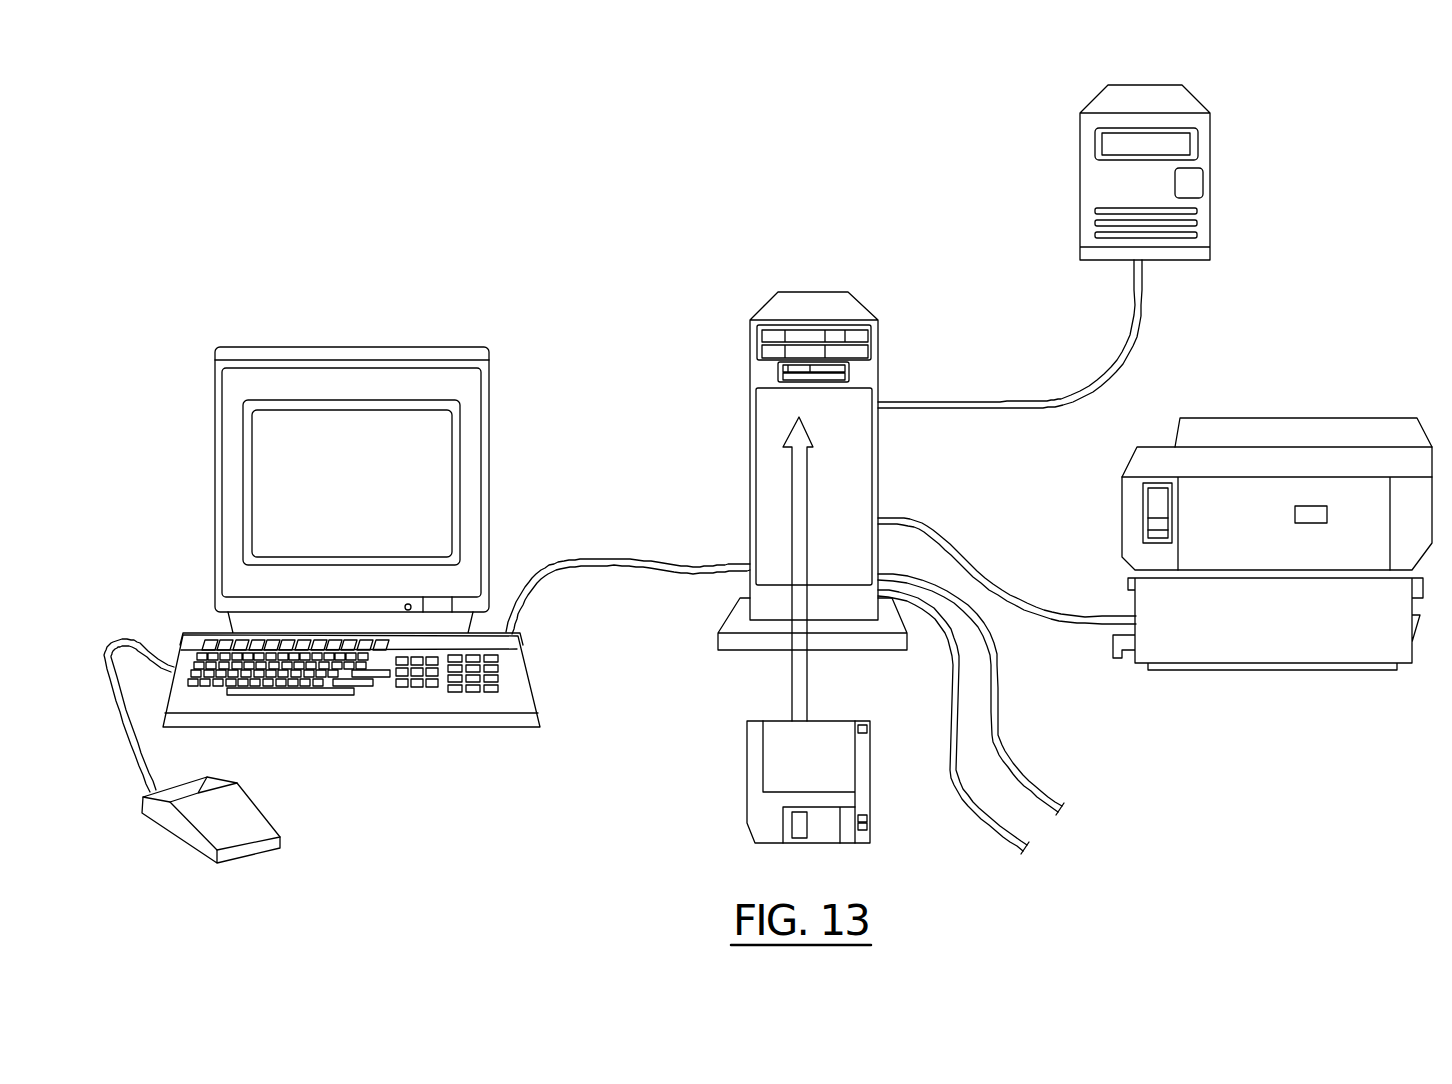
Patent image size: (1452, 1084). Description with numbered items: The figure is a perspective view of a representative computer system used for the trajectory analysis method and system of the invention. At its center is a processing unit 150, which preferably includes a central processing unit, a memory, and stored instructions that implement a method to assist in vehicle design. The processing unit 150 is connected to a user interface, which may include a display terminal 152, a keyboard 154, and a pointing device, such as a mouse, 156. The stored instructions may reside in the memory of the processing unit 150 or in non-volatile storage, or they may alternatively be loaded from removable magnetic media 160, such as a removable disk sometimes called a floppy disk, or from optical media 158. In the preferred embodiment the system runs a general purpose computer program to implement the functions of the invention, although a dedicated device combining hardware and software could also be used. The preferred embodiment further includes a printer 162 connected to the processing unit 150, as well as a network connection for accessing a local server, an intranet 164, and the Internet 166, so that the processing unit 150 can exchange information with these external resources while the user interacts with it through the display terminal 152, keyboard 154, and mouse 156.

The processing unit 150 is at (750, 345).
The display terminal 152 is at (340, 347).
The keyboard 154 is at (462, 730).
The pointing device 156 is at (253, 800).
The optical media 158 is at (1080, 168).
The removable magnetic media 160 is at (747, 758).
The printer 162 is at (1272, 418).
The intranet 164 is at (952, 773).
The Internet 166 is at (1005, 732).